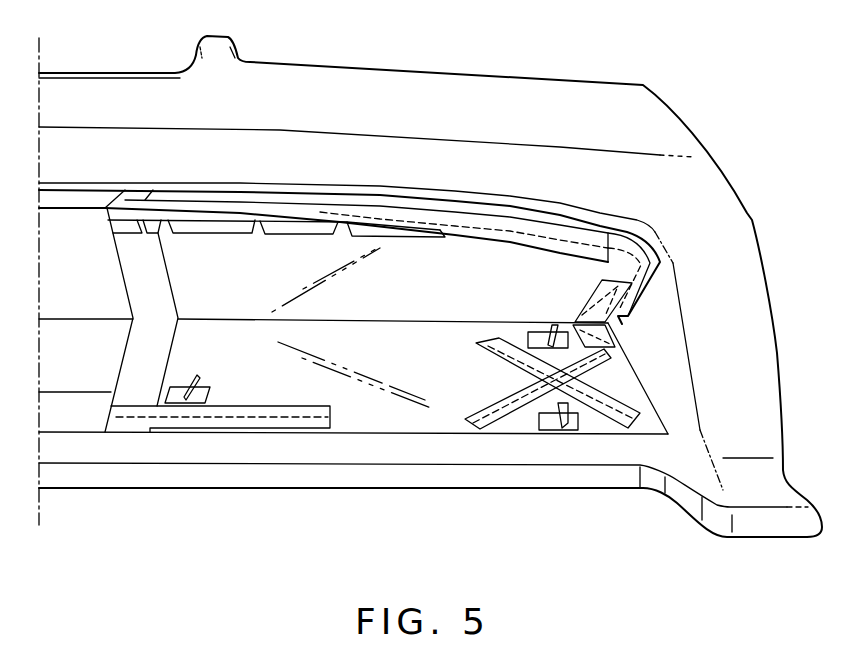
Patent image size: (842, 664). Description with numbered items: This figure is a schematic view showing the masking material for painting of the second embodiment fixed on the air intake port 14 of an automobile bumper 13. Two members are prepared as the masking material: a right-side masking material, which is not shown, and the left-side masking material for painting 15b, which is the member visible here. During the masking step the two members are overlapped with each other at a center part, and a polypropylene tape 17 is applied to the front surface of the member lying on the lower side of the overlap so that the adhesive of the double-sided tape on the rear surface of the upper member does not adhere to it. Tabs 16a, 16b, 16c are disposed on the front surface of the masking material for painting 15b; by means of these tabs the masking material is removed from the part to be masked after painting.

The automobile bumper 13 is at (713, 217).
The air intake port 14 is at (78, 343).
The left-side masking material for painting 15b is at (397, 413).
The tab 16a is at (197, 375).
The tab 16b is at (552, 330).
The tab 16c is at (563, 407).
The polypropylene tape 17 is at (150, 337).